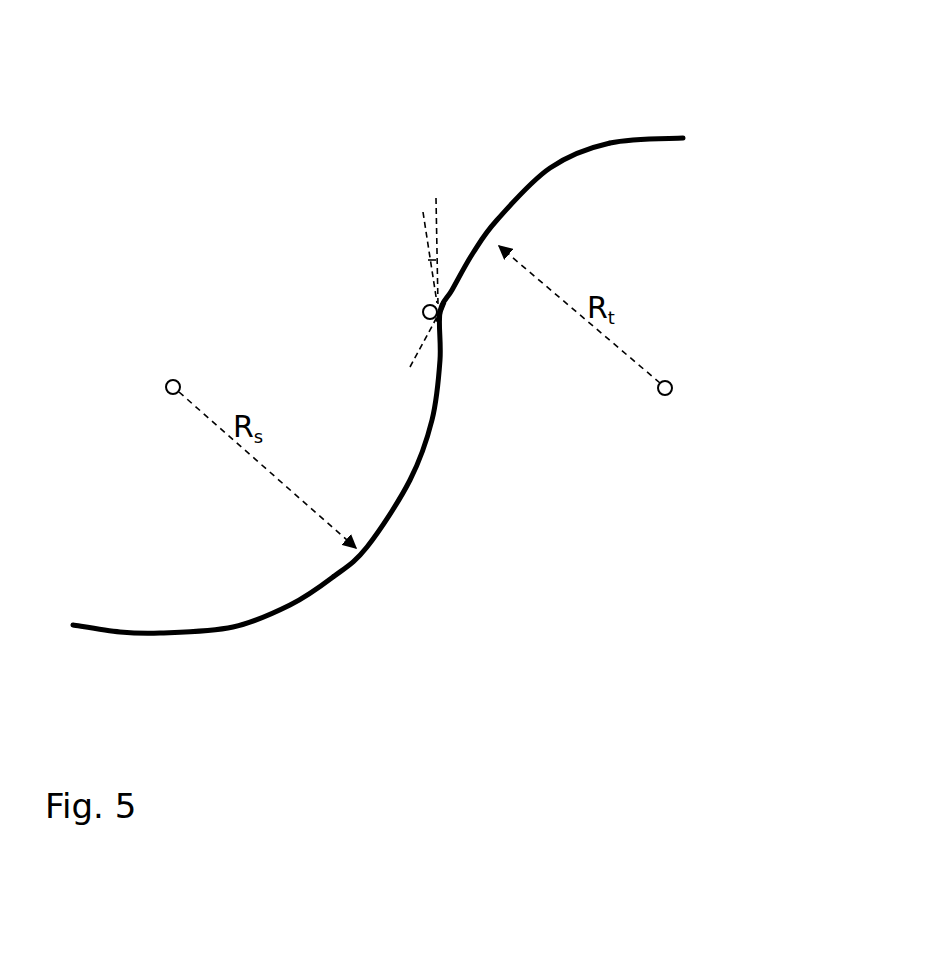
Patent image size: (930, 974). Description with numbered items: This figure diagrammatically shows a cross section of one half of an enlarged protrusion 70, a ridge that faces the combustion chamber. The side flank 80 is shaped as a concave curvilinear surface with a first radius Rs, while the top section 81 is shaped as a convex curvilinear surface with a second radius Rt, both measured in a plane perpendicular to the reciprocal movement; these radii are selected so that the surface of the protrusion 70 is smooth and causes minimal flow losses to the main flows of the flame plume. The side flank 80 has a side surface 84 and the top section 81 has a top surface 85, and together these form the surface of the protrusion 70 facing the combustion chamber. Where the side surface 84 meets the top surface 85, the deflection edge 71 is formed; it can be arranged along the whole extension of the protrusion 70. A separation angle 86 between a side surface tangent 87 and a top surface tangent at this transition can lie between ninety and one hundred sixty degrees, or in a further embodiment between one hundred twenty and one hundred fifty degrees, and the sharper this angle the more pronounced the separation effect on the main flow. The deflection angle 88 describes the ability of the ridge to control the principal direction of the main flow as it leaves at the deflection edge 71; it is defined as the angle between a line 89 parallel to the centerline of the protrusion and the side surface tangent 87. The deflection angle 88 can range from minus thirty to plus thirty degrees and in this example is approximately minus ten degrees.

The protrusion 70 is at (208, 126).
The deflection edge 71 is at (443, 315).
The side flank 80 is at (330, 578).
The top section 81 is at (610, 143).
The side surface 84 is at (410, 482).
The top surface 85 is at (550, 168).
The separation angle 86 is at (421, 309).
The side surface tangent 87 is at (423, 212).
The deflection angle 88 is at (433, 260).
The line parallel to the centerline of the protrusion 89 is at (437, 200).